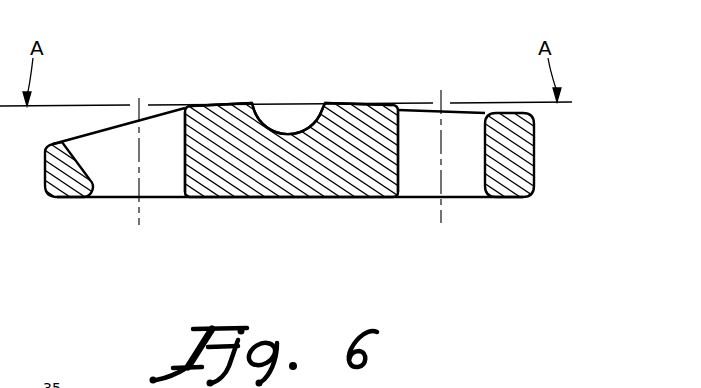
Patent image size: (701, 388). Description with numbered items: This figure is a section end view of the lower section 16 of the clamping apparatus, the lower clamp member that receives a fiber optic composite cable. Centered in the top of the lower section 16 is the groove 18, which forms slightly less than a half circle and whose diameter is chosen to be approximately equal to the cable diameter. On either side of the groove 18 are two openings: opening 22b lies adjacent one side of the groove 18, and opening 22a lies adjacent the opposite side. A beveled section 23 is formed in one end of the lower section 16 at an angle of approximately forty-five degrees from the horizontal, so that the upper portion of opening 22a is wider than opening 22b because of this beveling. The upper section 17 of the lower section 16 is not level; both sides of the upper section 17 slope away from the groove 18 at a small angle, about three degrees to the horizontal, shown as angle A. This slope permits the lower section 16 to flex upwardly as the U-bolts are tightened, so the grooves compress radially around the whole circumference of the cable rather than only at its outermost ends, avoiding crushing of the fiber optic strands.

The lower section 16 is at (362, 198).
The upper section 17 is at (227, 101).
The groove 18 is at (274, 131).
The opening 22a is at (182, 165).
The opening 22b is at (398, 158).
The beveled section 23 is at (83, 160).